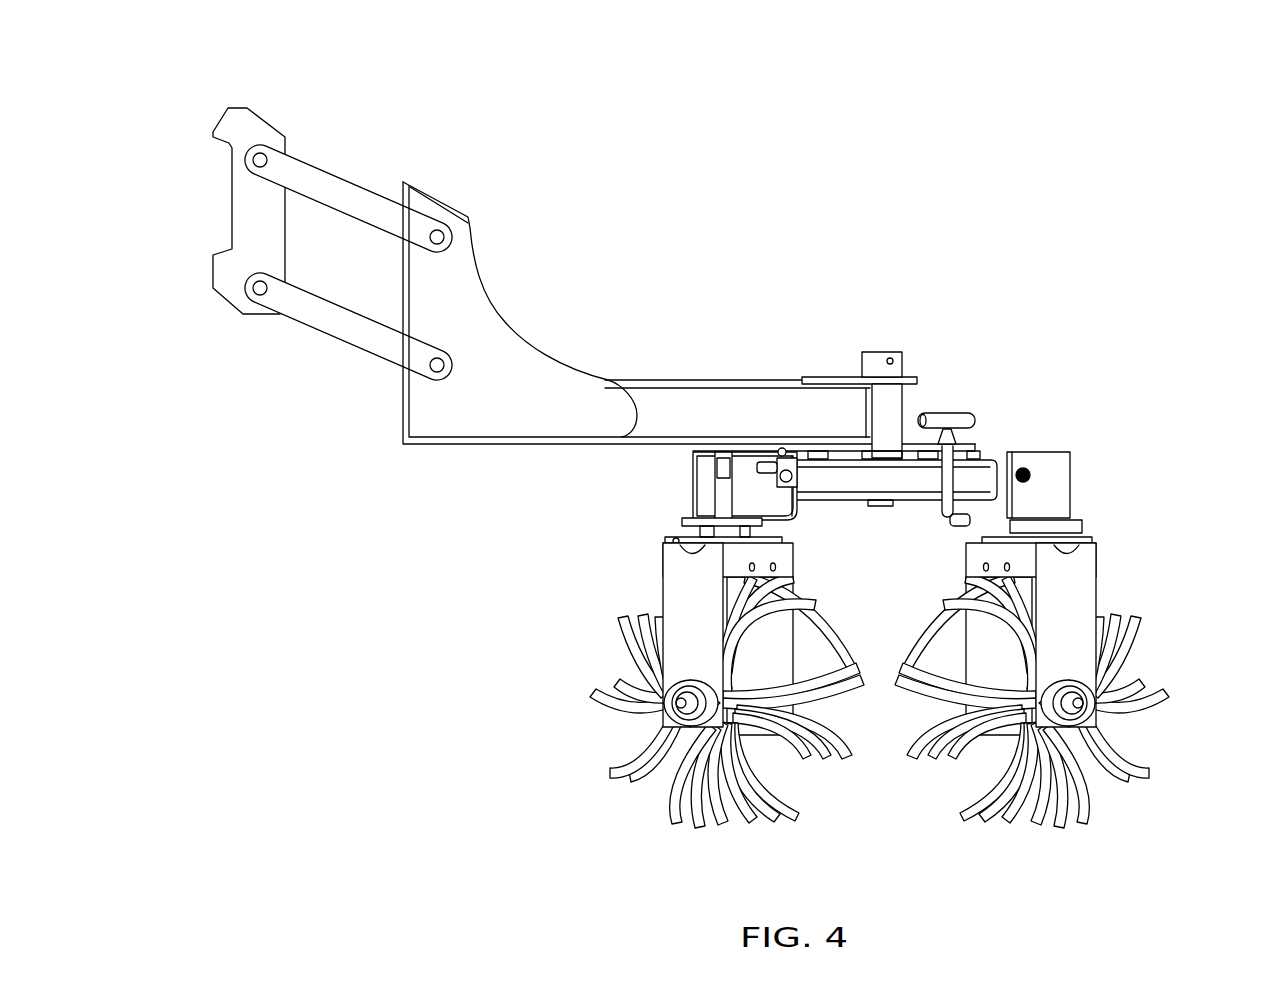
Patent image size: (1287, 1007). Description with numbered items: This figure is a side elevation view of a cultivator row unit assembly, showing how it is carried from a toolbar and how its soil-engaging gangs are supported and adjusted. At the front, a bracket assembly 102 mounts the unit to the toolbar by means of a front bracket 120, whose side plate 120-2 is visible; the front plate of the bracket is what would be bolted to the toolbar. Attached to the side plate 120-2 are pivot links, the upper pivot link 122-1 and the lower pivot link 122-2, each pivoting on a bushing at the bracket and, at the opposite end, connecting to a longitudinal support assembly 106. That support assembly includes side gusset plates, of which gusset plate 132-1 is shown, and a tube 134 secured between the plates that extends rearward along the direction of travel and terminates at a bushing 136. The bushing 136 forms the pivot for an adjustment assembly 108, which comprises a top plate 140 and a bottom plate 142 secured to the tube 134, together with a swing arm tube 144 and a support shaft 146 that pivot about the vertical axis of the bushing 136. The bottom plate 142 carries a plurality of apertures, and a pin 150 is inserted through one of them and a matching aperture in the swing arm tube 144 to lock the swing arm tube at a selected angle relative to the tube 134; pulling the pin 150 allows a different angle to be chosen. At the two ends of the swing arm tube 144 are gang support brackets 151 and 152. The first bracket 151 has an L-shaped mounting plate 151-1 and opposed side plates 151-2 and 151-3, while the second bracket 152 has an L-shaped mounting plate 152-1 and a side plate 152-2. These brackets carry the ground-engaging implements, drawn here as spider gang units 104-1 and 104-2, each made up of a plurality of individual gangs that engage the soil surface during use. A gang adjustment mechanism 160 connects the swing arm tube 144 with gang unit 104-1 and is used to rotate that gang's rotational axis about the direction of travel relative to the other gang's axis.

The bracket assembly 102 is at (302, 466).
The gang unit 104-1 is at (608, 820).
The gang unit 104-2 is at (1105, 833).
The longitudinal support assembly 106 is at (485, 468).
The adjustment assembly 108 is at (937, 295).
The front bracket 120 is at (195, 103).
The side plate 120-2 is at (250, 120).
The pivot link 122-1 is at (340, 190).
The pivot link 122-2 is at (325, 320).
The side gusset plate 132-1 is at (467, 310).
The tube 134 is at (682, 405).
The bushing 136 is at (906, 400).
The top plate 140 is at (820, 373).
The bottom plate 142 is at (830, 487).
The swing arm tube 144 is at (913, 487).
The support shaft 146 is at (880, 507).
The pin 150 is at (962, 412).
The gang support bracket 151 is at (672, 494).
The L-shaped mounting plate 151-1 is at (682, 520).
The side plate 151-2 is at (747, 462).
The side plate 151-3 is at (693, 457).
The gang support bracket 152 is at (1110, 474).
The L-shaped mounting plate 152-1 is at (965, 527).
The side plate 152-2 is at (1050, 455).
The gang adjustment mechanism 160 is at (723, 440).